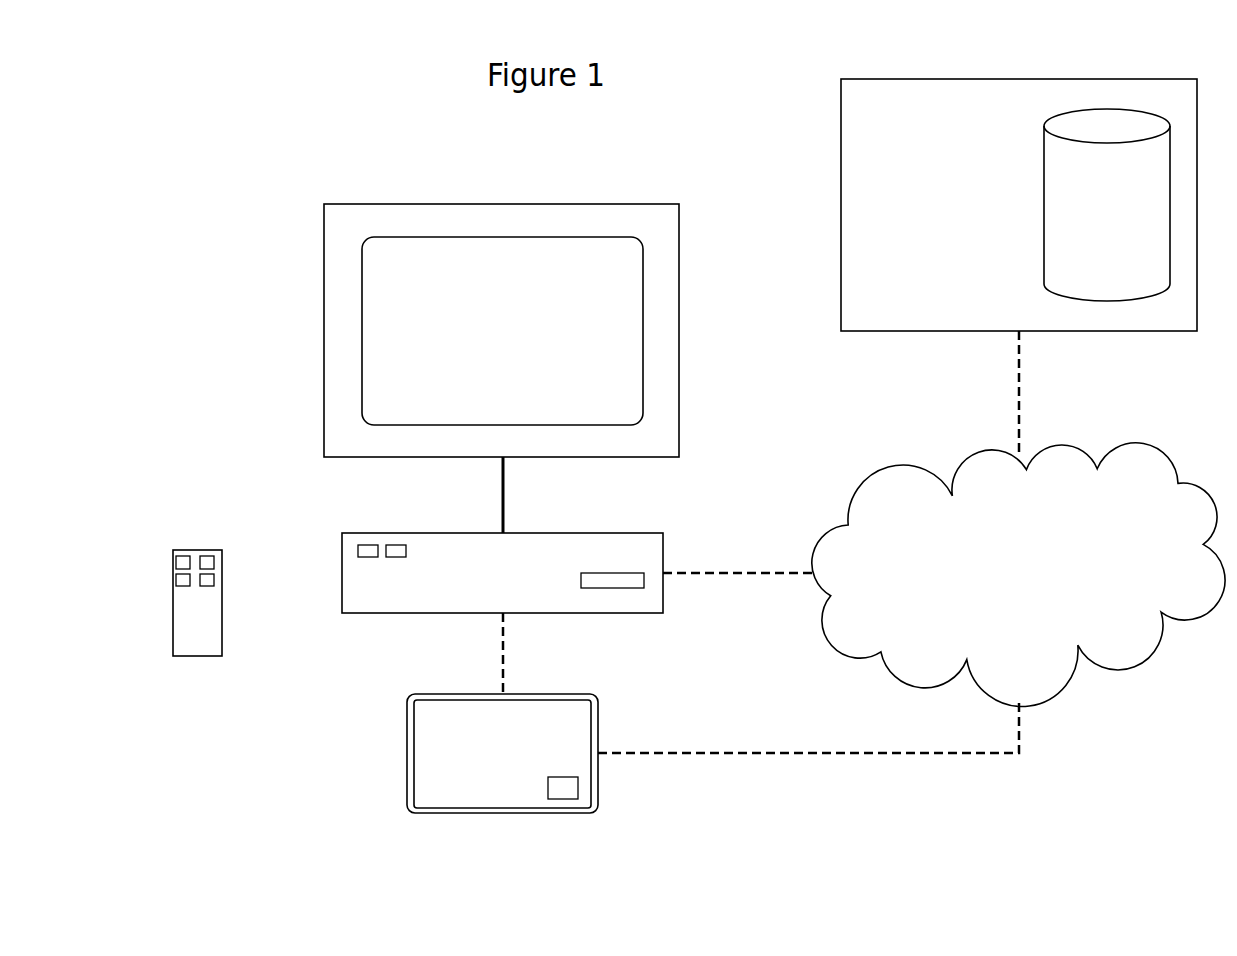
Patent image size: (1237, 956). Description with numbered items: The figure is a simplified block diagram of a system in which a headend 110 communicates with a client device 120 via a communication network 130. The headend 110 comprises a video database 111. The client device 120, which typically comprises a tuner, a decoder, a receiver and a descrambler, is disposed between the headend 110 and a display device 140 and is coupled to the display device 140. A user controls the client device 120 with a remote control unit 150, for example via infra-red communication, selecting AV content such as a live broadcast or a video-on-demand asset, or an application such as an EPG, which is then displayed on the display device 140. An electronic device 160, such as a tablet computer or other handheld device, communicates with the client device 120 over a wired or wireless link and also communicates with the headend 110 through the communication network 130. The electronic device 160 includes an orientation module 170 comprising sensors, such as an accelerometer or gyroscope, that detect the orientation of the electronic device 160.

The headend 110 is at (876, 80).
The video database 111 is at (1042, 202).
The client device 120 is at (366, 613).
The communication network 130 is at (888, 488).
The display device 140 is at (352, 207).
The remote control unit 150 is at (183, 550).
The electronic device 160 is at (410, 808).
The orientation module 170 is at (577, 797).